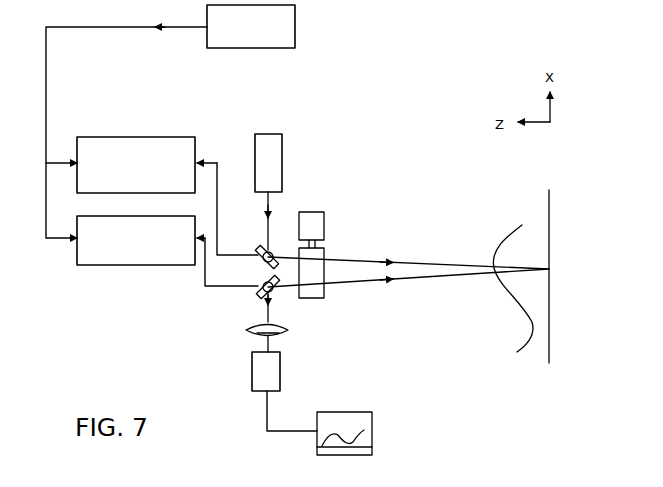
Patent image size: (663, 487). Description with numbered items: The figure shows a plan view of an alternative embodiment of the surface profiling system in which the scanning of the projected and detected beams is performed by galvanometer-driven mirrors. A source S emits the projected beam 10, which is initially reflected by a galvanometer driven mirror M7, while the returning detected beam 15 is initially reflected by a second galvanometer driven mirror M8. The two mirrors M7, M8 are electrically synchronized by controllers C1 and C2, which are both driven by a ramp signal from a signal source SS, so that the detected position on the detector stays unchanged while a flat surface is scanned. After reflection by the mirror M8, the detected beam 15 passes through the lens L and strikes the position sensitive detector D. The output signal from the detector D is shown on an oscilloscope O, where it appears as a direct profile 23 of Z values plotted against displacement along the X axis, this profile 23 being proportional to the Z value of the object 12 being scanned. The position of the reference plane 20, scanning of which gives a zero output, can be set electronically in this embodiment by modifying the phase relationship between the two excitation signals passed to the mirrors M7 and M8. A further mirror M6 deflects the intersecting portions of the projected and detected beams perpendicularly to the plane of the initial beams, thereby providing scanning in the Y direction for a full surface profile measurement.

The signal source SS is at (285, 49).
The controller C1 is at (136, 165).
The controller C2 is at (136, 240).
The light source S is at (268, 163).
The projected beam 10 is at (268, 201).
The galvanometer driven mirror M7 is at (258, 249).
The galvanometer driven mirror M8 is at (259, 292).
The mirror M6 is at (324, 251).
The detected beam 15 is at (276, 324).
The lens L is at (276, 334).
The position sensitive detector D is at (266, 363).
The oscilloscope O is at (337, 412).
The profile 23 is at (372, 432).
The object 12 is at (515, 298).
The reference plane 20 is at (551, 312).